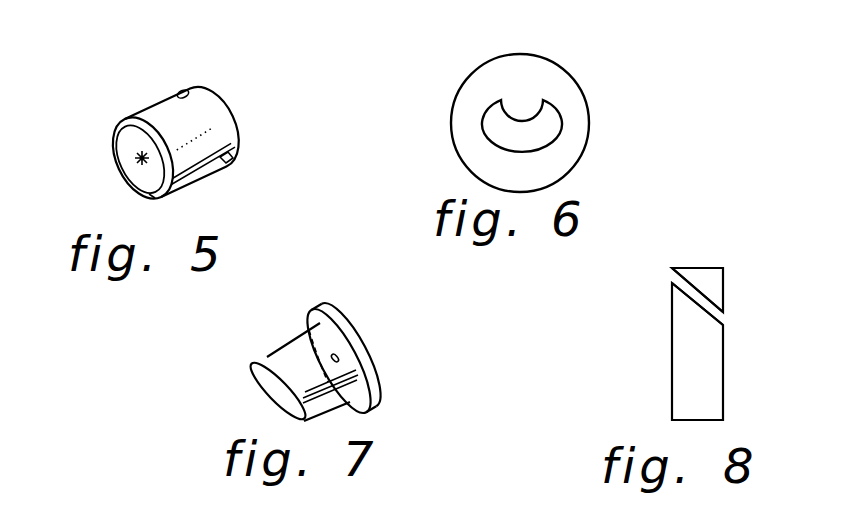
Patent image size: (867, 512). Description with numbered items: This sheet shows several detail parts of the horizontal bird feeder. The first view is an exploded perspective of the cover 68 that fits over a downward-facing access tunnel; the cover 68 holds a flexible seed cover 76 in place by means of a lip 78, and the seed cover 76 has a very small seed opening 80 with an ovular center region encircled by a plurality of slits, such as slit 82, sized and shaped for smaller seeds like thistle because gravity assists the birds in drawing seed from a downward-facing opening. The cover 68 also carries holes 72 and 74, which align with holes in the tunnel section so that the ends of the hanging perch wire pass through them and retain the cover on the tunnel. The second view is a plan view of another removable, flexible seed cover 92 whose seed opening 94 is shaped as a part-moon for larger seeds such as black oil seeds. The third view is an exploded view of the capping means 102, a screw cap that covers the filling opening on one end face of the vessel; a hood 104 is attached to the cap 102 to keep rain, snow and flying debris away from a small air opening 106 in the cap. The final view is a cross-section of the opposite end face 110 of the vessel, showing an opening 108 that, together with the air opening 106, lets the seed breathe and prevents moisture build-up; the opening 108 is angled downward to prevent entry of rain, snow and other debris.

In FIG. 5, the cover 68 is at (217, 101).
In FIG. 5, the hole 72 is at (182, 78).
In FIG. 5, the hole 74 is at (229, 165).
In FIG. 5, the seed cover 76 is at (125, 146).
In FIG. 5, the lip 78 is at (153, 197).
In FIG. 5, the seed opening 80 is at (123, 170).
In FIG. 5, the slit 82 is at (134, 158).
In FIG. 6, the seed cover 92 is at (571, 68).
In FIG. 6, the seed opening 94 is at (494, 126).
In FIG. 7, the capping means 102 is at (338, 306).
In FIG. 7, the hood 104 is at (267, 360).
In FIG. 7, the air opening 106 is at (340, 357).
In FIG. 8, the opening 108 is at (661, 266).
In FIG. 8, the face 110 is at (710, 268).